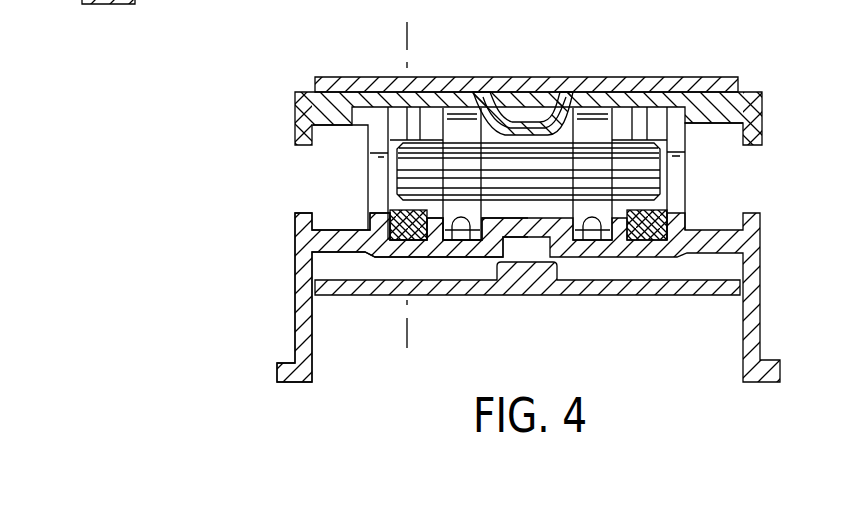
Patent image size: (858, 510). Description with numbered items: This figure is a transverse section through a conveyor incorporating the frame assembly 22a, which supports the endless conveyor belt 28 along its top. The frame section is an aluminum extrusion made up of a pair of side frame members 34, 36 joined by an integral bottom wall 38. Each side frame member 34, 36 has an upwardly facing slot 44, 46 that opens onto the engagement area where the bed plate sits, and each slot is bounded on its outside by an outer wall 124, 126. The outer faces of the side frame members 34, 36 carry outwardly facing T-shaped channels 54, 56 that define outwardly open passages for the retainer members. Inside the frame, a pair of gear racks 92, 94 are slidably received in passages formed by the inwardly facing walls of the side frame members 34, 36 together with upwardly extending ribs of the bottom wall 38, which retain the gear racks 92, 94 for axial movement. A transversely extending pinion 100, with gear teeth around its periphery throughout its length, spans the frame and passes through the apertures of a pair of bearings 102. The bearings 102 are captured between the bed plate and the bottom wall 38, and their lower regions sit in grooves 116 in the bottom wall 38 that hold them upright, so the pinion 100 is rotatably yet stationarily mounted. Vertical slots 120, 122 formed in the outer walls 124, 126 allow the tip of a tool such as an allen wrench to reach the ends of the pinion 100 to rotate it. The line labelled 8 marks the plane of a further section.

The section line 8- 8 is at (396, 32).
The frame assembly 22a is at (780, 82).
The endless conveyor belt 28 is at (502, 66).
The side frame member 34 is at (280, 118).
The side frame member 36 is at (788, 119).
The bottom wall 38 is at (497, 262).
The upwardly facing slot 44 is at (400, 120).
The upwardly facing slot 46 is at (658, 117).
The T-shaped channel 54 is at (343, 227).
The T-shaped channel 56 is at (713, 222).
The gear rack 92 is at (408, 230).
The gear rack 94 is at (640, 240).
The pinion 100 is at (528, 140).
The bearing 102 is at (433, 120).
The groove 116 is at (466, 224).
The vertical slot 120 is at (370, 182).
The vertical slot 122 is at (678, 180).
The outer wall 124 is at (365, 186).
The outer wall 126 is at (713, 185).